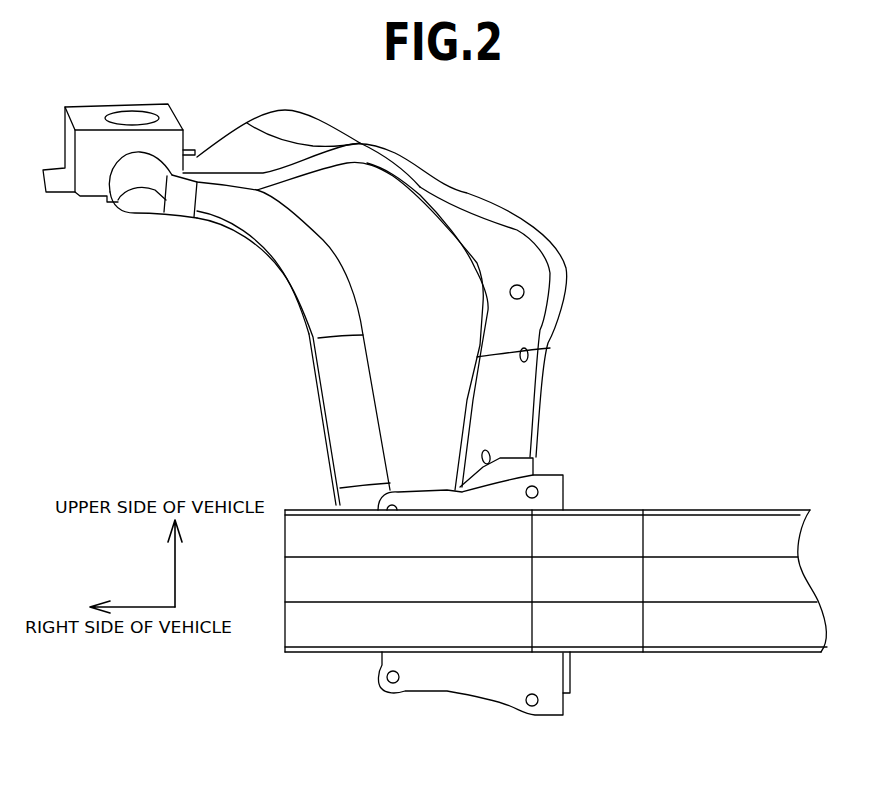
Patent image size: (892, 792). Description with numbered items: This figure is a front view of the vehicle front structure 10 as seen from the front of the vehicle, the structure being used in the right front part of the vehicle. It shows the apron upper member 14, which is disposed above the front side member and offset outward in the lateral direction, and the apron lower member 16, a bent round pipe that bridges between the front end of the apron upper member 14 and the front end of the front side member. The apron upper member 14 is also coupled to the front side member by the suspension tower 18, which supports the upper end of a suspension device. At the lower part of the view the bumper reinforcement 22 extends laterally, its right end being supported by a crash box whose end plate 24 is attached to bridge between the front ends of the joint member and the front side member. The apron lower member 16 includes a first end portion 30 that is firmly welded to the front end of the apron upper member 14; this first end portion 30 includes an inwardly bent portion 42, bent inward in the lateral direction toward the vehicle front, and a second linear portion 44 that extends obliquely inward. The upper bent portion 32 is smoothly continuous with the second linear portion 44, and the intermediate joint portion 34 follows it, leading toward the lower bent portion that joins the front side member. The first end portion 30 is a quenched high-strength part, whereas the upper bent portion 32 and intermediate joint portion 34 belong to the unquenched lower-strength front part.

The vehicle front structure 10 is at (597, 161).
The apron upper member 14 is at (92, 112).
The apron lower member 16 is at (229, 333).
The suspension tower 18 is at (538, 292).
The bumper reinforcement 22 is at (722, 627).
The end plate 24 is at (465, 677).
The first end portion 30 is at (144, 257).
The upper bent portion 32 is at (273, 238).
The intermediate joint portion 34 is at (345, 411).
The inwardly bent portion 42 is at (133, 188).
The second linear portion 44 is at (183, 198).